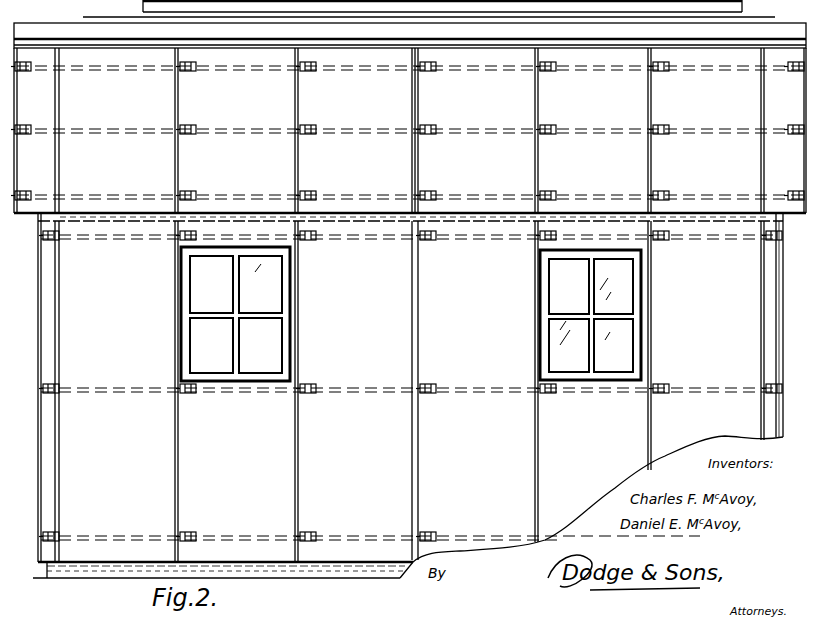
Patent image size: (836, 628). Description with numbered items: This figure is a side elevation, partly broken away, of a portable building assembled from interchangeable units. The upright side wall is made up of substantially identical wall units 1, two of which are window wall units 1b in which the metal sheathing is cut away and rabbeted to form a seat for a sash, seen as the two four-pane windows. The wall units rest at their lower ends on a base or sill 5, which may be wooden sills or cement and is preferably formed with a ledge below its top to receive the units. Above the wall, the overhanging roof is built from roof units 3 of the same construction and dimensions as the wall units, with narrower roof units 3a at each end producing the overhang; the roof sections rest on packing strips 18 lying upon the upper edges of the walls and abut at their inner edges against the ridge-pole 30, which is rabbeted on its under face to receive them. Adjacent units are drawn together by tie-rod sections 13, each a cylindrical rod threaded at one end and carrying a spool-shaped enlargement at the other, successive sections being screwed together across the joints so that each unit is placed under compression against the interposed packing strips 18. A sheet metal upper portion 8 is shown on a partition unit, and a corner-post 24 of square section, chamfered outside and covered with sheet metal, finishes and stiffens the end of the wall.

The ridge-pole 30 is at (61, 27).
The narrower roof unit 3a is at (30, 108).
The roof unit 3 is at (410, 154).
The sheet metal upper portion 8 is at (411, 97).
The packing strip 18 is at (411, 166).
The tie-rod section 13 is at (268, 69).
The corner-post 24 is at (50, 356).
The wall unit 1 is at (395, 314).
The window wall unit 1b is at (410, 505).
The base or sill 5 is at (122, 574).